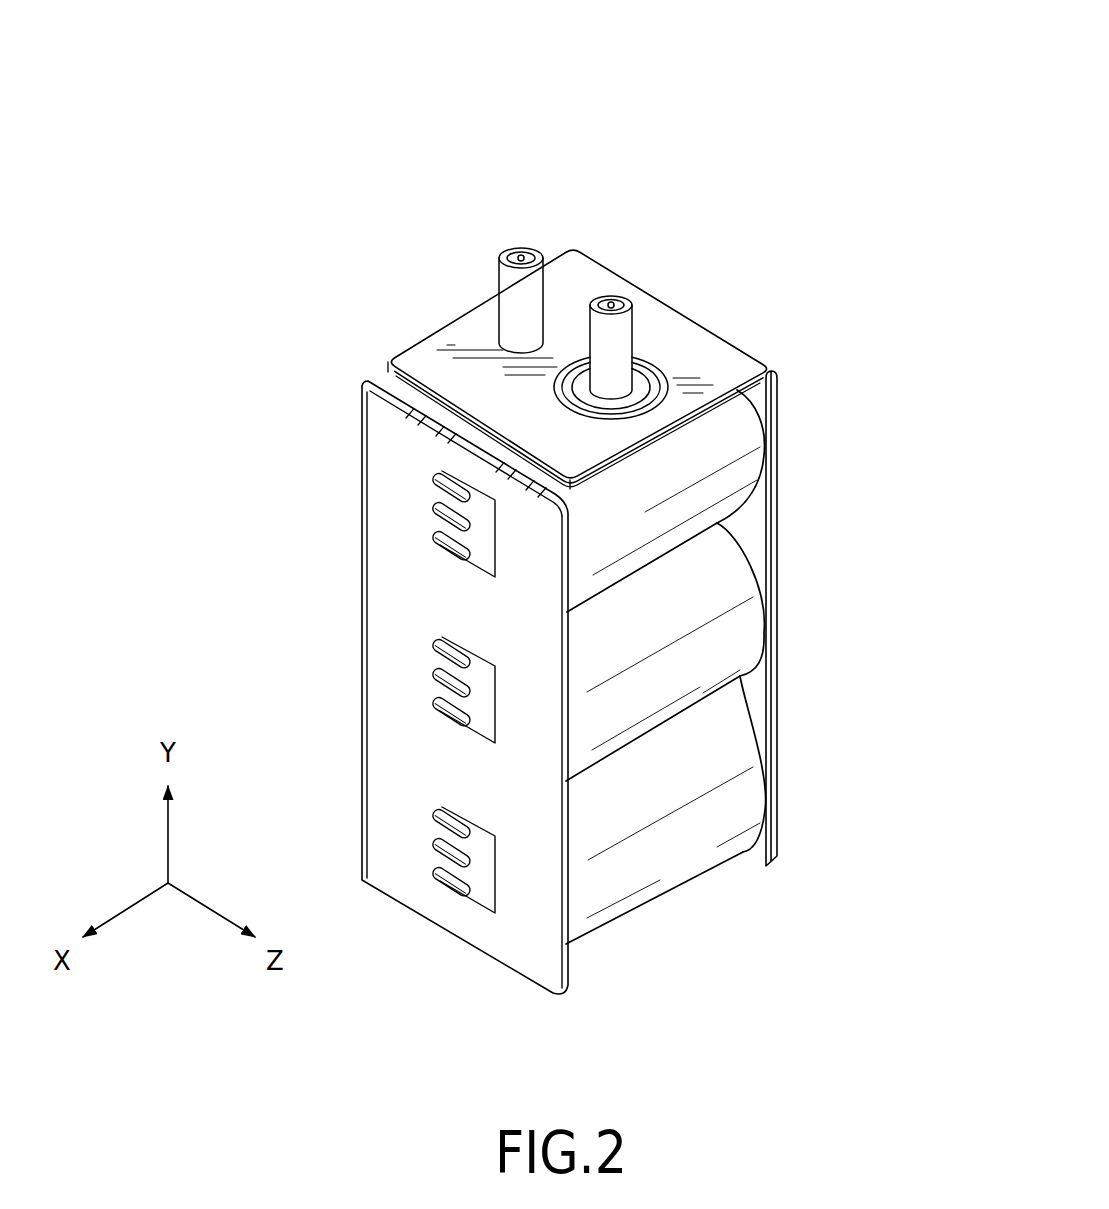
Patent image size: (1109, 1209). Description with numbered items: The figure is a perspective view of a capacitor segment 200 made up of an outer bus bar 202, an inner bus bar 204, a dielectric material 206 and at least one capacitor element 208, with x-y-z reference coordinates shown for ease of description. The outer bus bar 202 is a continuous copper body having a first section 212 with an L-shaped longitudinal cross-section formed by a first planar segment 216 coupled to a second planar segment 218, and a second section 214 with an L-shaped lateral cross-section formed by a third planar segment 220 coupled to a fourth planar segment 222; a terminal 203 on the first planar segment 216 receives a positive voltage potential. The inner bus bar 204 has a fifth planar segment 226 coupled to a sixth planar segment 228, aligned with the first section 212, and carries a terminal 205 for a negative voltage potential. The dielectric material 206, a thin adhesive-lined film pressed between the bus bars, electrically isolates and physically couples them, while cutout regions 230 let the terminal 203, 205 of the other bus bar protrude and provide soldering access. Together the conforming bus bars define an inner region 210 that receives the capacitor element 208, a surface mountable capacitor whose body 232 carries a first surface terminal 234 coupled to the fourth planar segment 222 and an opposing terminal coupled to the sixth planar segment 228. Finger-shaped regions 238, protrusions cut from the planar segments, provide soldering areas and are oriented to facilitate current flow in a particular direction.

The capacitor segment 200 is at (684, 87).
The outer bus bar 202 is at (367, 484).
The terminal 203 is at (521, 257).
The inner bus bar 204 is at (722, 428).
The terminal 205 is at (611, 305).
The dielectric material 206 is at (778, 595).
The capacitor element 208 is at (750, 630).
The inner region 210 is at (665, 955).
The first section 212 is at (852, 381).
The second section 214 is at (374, 301).
The first planar segment 216 is at (567, 278).
The second planar segment 218 is at (780, 820).
The third planar segment 220 is at (382, 370).
The fourth planar segment 222 is at (374, 553).
The fifth planar segment 226 is at (524, 479).
The sixth planar segment 228 is at (765, 718).
The cutout regions 230 is at (655, 365).
The body 232 is at (690, 820).
The first surface terminal 234 is at (490, 556).
The finger-shaped regions 238 is at (470, 506).